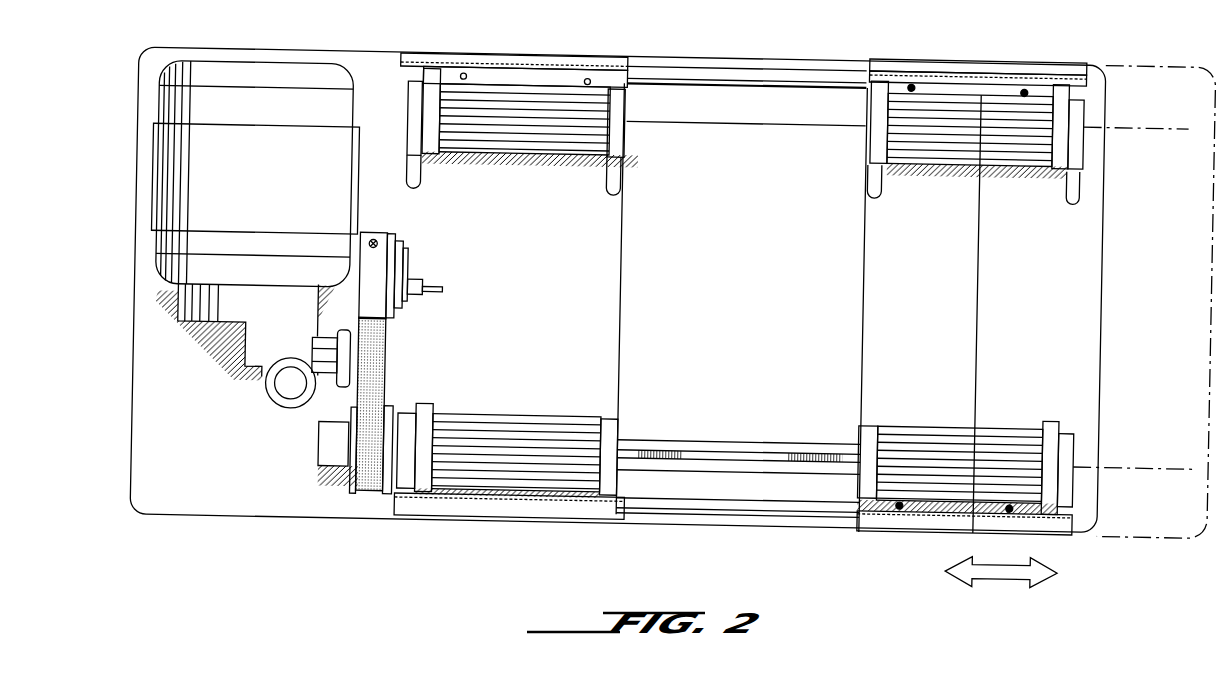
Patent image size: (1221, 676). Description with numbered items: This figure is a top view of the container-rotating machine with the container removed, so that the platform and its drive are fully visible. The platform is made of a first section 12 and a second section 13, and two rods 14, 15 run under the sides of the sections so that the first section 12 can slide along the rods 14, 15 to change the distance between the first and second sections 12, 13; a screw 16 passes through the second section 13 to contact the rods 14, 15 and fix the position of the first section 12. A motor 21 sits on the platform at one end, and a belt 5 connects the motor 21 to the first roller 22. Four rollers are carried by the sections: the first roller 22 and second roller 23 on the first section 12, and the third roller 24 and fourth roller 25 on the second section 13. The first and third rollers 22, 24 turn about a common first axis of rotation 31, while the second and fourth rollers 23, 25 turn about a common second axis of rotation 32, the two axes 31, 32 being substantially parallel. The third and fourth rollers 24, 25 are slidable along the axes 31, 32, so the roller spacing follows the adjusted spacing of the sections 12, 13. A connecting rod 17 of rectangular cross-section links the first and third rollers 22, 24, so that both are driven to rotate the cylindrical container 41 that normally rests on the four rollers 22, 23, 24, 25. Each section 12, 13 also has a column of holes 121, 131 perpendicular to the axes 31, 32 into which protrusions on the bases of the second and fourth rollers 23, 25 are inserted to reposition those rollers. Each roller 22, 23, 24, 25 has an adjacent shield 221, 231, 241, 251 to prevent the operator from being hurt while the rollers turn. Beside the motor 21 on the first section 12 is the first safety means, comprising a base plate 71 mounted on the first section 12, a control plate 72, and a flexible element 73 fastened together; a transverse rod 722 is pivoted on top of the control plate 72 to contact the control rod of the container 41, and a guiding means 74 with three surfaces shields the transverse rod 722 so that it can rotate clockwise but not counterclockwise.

The belt 5 is at (381, 488).
The first section 12 is at (217, 492).
The second section 13 is at (1094, 507).
The rod 14 is at (754, 506).
The rod 15 is at (748, 55).
The screw 16 is at (911, 72).
The connecting rod 17 is at (750, 443).
The motor 21 is at (172, 159).
The first roller 22 is at (527, 418).
The second roller 23 is at (513, 78).
The third roller 24 is at (930, 470).
The fourth roller 25 is at (956, 89).
The first axis of rotation 31 is at (1142, 468).
The second axis of rotation 32 is at (1148, 127).
The cylindrical container 41 is at (334, 334).
The base plate 71 is at (377, 235).
The control plate 72 is at (397, 235).
The flexible element 73 is at (404, 245).
The guiding means 74 is at (423, 278).
The holes 121 is at (606, 174).
The holes 131 is at (1074, 172).
The shield 221 is at (512, 513).
The shield 231 is at (588, 51).
The shield 241 is at (869, 511).
The shield 251 is at (1080, 44).
The transverse rod 722 is at (440, 285).